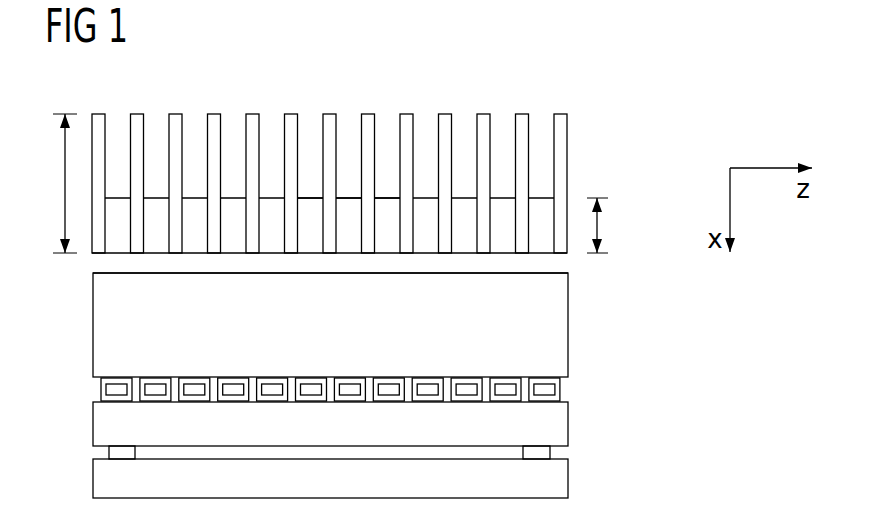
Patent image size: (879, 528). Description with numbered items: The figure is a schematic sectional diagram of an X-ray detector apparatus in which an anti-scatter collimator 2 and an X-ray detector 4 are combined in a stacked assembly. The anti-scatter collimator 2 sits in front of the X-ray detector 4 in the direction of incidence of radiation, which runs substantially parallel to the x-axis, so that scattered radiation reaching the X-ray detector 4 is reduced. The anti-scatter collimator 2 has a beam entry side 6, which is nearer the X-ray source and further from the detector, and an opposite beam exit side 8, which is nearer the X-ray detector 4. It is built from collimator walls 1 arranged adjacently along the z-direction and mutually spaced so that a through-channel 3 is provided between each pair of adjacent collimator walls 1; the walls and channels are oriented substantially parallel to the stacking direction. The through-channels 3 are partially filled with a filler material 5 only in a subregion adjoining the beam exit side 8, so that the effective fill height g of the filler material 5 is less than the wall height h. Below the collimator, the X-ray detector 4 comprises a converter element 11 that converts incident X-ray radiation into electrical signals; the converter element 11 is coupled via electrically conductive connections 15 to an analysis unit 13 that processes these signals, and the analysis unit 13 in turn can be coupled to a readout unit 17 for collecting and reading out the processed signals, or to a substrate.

The collimator walls 1 is at (177, 113).
The anti-scatter collimator 2 is at (610, 178).
The through-channel 3 is at (312, 122).
The X-ray detector 4 is at (608, 348).
The filler material 5 is at (228, 207).
The beam entry side 6 is at (470, 108).
The beam exit side 8 is at (467, 258).
The converter element 11 is at (100, 325).
The analysis unit 13 is at (100, 425).
The electrically conductive connections 15 is at (547, 388).
The readout unit 17 is at (100, 478).